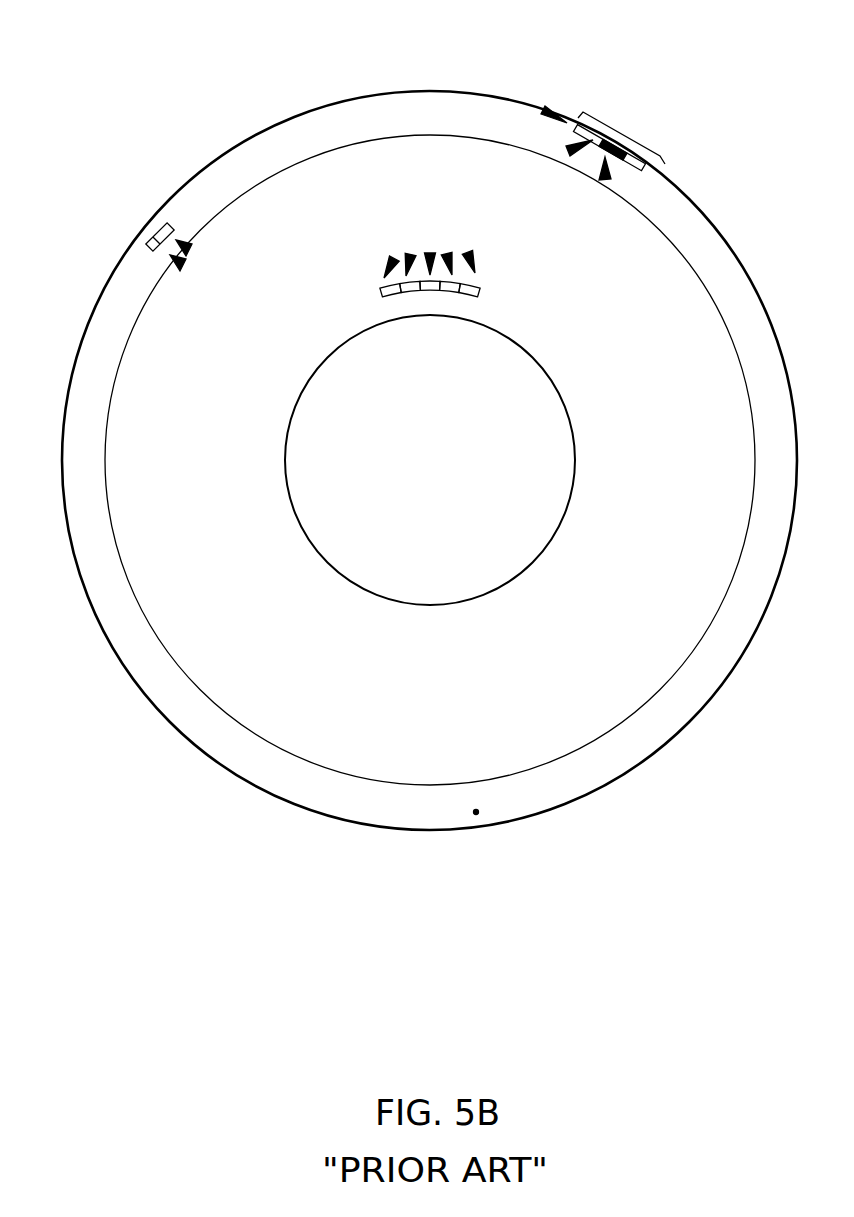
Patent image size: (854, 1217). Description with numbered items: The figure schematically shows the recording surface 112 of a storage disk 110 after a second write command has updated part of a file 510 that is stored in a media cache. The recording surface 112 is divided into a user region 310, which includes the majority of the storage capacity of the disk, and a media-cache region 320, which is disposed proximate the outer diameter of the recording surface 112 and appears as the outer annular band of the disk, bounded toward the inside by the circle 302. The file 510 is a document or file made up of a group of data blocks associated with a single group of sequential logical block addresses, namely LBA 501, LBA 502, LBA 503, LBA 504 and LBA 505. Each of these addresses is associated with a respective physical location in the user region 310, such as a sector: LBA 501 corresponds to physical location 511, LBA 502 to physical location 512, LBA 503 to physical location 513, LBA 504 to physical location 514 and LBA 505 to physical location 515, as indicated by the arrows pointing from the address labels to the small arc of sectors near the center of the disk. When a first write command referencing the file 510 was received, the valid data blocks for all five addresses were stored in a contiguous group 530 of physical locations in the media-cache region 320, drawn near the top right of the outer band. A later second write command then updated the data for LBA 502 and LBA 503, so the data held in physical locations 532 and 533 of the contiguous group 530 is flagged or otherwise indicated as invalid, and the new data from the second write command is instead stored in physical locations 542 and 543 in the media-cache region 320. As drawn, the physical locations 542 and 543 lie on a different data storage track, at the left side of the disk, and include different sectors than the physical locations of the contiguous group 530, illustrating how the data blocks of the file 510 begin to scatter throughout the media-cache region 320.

The storage disk 110 is at (137, 233).
The recording surface 112 is at (455, 712).
The disk 302 is at (210, 757).
The user region 310 is at (208, 474).
The media-cache region 320 is at (476, 815).
The LBA 501 is at (394, 259).
The LBA 502 is at (410, 254).
The LBA 503 is at (430, 253).
The LBA 504 is at (447, 254).
The LBA 505 is at (467, 252).
The file 510 is at (548, 112).
The physical location 511 is at (392, 295).
The physical location 512 is at (413, 291).
The physical location 513 is at (379, 389).
The physical location 514 is at (447, 292).
The physical location 515 is at (466, 295).
The contiguous group 530 is at (622, 133).
The physical location 532 is at (566, 150).
The physical location 533 is at (605, 178).
The physical location 542 is at (176, 265).
The physical location 543 is at (186, 250).